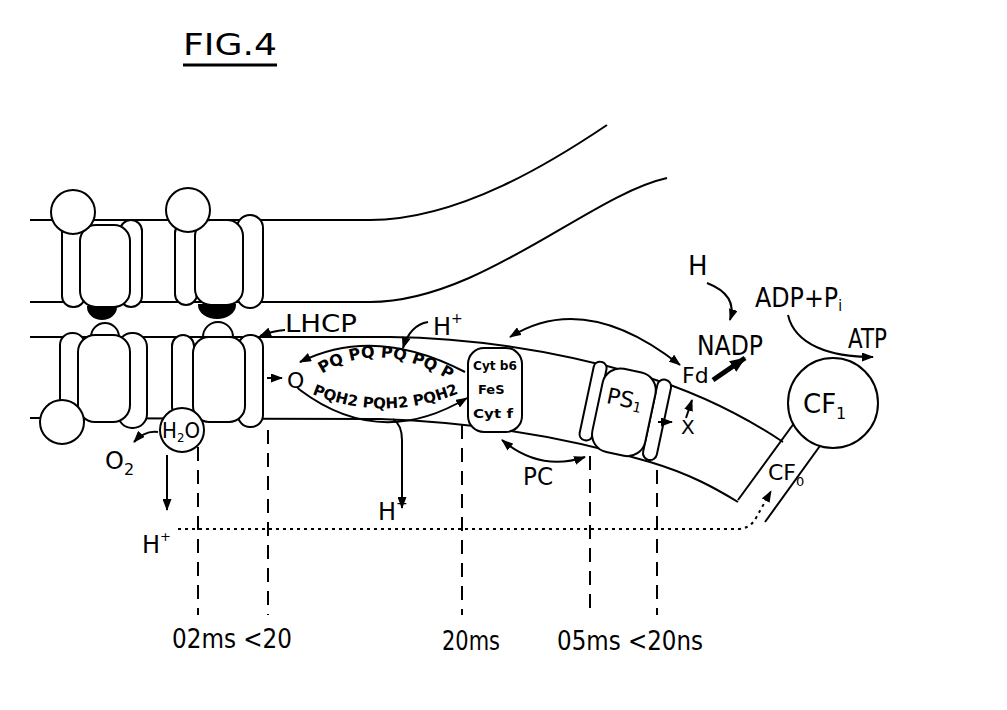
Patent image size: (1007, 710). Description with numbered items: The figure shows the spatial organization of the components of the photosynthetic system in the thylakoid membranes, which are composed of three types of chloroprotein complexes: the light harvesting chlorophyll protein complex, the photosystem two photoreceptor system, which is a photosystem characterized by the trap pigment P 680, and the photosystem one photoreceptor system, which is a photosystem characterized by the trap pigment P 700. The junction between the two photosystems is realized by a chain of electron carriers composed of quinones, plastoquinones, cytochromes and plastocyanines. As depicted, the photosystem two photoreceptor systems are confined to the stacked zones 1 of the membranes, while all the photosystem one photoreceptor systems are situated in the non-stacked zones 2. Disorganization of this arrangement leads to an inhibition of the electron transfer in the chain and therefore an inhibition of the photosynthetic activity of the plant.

The stacked zones 1 is at (229, 432).
The non-stacked zones 2 is at (600, 353).
The trap pigment P 680 is at (219, 396).
The trap pigment P 700 is at (617, 429).